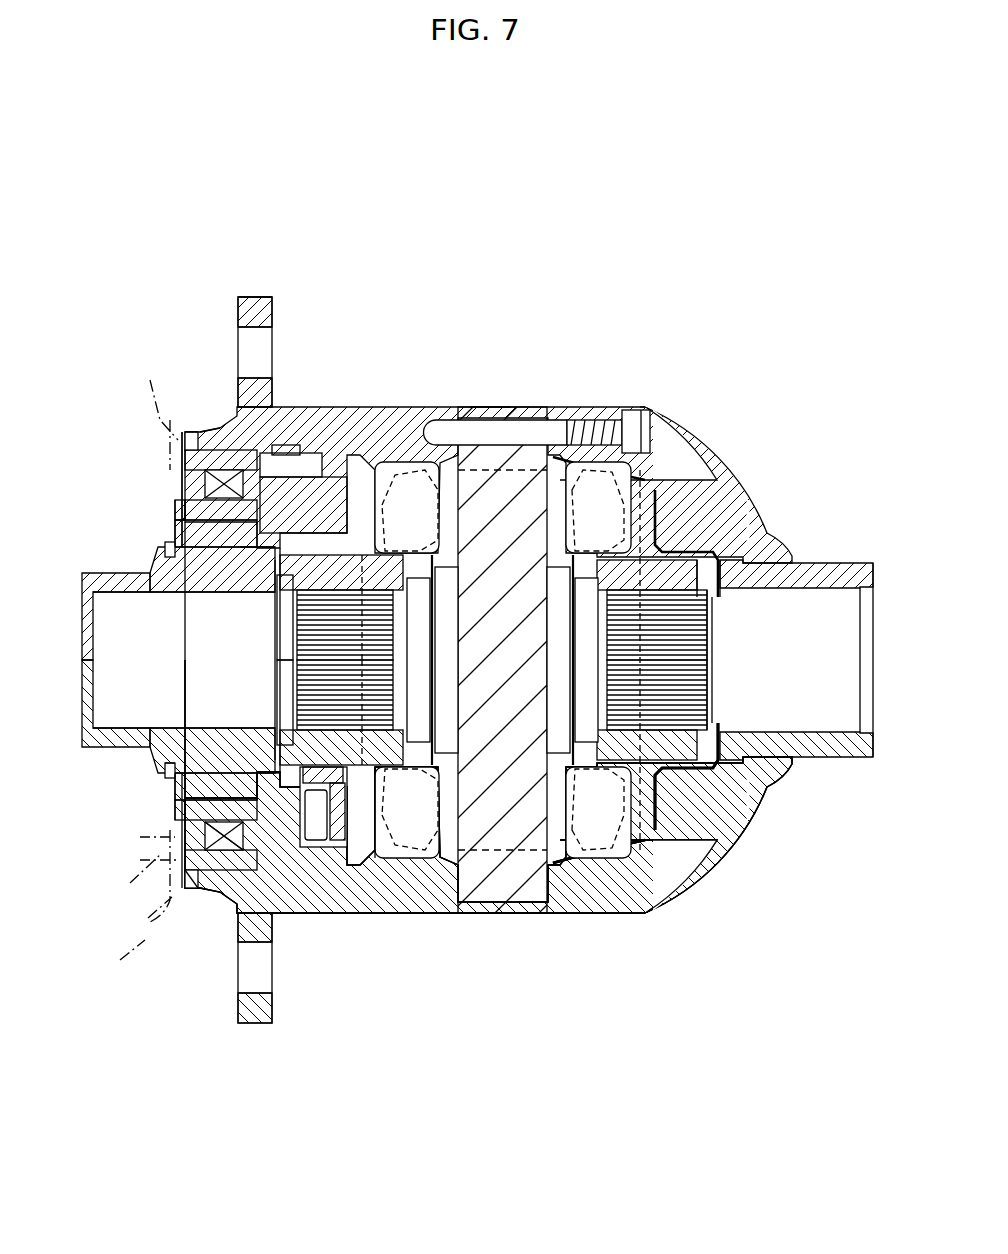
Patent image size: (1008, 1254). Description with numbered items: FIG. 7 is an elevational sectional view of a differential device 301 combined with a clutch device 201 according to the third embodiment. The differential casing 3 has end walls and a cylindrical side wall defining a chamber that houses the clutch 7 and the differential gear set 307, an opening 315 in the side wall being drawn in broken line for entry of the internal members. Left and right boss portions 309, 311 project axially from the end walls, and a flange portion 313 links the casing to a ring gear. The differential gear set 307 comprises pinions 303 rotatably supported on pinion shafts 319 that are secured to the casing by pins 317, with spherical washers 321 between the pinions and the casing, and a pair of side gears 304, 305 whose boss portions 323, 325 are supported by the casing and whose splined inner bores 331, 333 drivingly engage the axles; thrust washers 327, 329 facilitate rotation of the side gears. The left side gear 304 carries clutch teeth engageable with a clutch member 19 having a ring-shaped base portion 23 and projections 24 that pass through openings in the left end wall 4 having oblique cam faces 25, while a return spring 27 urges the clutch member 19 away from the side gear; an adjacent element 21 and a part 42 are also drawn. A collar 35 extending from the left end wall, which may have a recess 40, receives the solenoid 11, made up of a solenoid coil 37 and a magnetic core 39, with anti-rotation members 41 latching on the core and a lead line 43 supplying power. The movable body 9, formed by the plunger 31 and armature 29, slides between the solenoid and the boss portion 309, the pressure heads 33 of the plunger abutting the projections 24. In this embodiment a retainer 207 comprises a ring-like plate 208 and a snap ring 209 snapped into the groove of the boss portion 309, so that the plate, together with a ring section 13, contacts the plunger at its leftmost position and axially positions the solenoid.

The differential device 301 is at (528, 190).
The clutch device 201 is at (259, 262).
The differential casing 3 is at (331, 906).
The left end wall 4 is at (268, 786).
The clutch 7 is at (338, 402).
The movable body 9 is at (226, 563).
The solenoid 11 is at (176, 822).
The ring section 13 is at (176, 783).
The clutch member 19 is at (303, 840).
The ring 21 is at (352, 846).
The base portion 23 is at (352, 520).
The projections 24 is at (233, 405).
The cam faces 25 is at (287, 468).
The return spring 27 is at (336, 770).
The armature 29 is at (176, 806).
The plunger 31 is at (176, 768).
The pressure heads 33 is at (251, 566).
The collar 35 is at (214, 430).
The solenoid coil 37 is at (236, 847).
The magnetic core 39 is at (196, 887).
The recess 40 is at (184, 440).
The anti-rotation members 41 is at (150, 380).
The cover plate 42 is at (182, 440).
The lead line 43 is at (165, 895).
The retainer 207 is at (160, 521).
The ring-like plate 208 is at (170, 510).
The snap ring 209 is at (164, 549).
The pinions 303 is at (577, 815).
The left side gear 304 is at (393, 788).
The right side gear 305 is at (613, 802).
The differential gear set 307 is at (531, 920).
The left boss portion 309 is at (126, 582).
The right boss portion 311 is at (849, 576).
The flange portion 313 is at (256, 1014).
The opening 315 is at (493, 405).
The pins 317 is at (534, 405).
The pinion shafts 319 is at (492, 906).
The spherical washers 321 is at (448, 838).
The boss portion 323 is at (418, 405).
The boss portion 325 is at (700, 580).
The thrust washer 327 is at (272, 780).
The thrust washer 329 is at (658, 530).
The splined inner bore 331 is at (320, 661).
The splined inner bore 333 is at (696, 661).